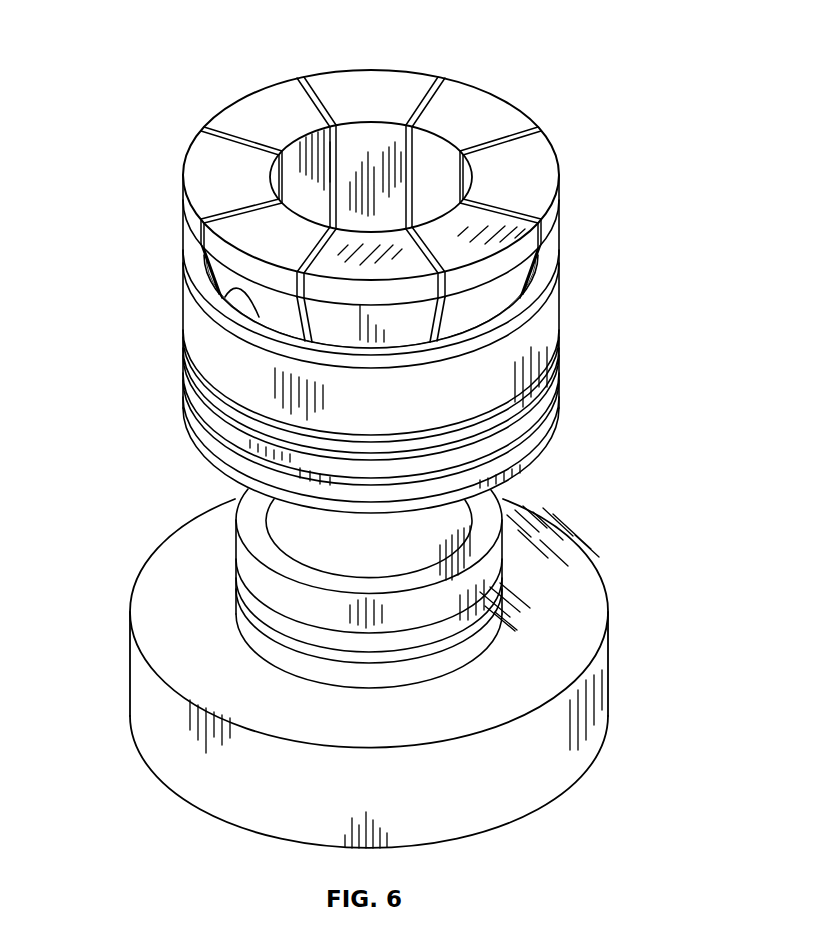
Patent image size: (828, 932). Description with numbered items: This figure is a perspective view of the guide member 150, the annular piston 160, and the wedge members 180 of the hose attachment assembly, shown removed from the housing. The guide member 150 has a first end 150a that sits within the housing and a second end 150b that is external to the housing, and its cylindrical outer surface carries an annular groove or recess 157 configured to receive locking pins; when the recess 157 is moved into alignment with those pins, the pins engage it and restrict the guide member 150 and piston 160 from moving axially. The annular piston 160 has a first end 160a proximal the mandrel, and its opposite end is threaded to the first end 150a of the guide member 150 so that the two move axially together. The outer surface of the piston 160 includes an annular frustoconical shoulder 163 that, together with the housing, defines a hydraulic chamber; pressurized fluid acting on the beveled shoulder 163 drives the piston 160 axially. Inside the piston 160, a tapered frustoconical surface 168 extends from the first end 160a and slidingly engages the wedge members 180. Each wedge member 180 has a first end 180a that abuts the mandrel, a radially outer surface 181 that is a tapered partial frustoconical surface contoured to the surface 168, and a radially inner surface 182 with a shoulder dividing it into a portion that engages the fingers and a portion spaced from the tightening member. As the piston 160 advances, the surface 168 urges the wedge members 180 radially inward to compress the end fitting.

The guide member 150 is at (608, 672).
The first end 150a is at (492, 513).
The second end 150b is at (466, 838).
The annular groove or recess 157 is at (283, 627).
The annular piston 160 is at (557, 303).
The first end 160a is at (223, 343).
The annular frustoconical shoulder 163 is at (272, 462).
The tapered frustoconical surface 168 is at (228, 290).
The wedge member 180 is at (500, 117).
The first end 180a is at (332, 80).
The radially outer surface 181 is at (500, 295).
The radially inner surface 182 is at (310, 147).